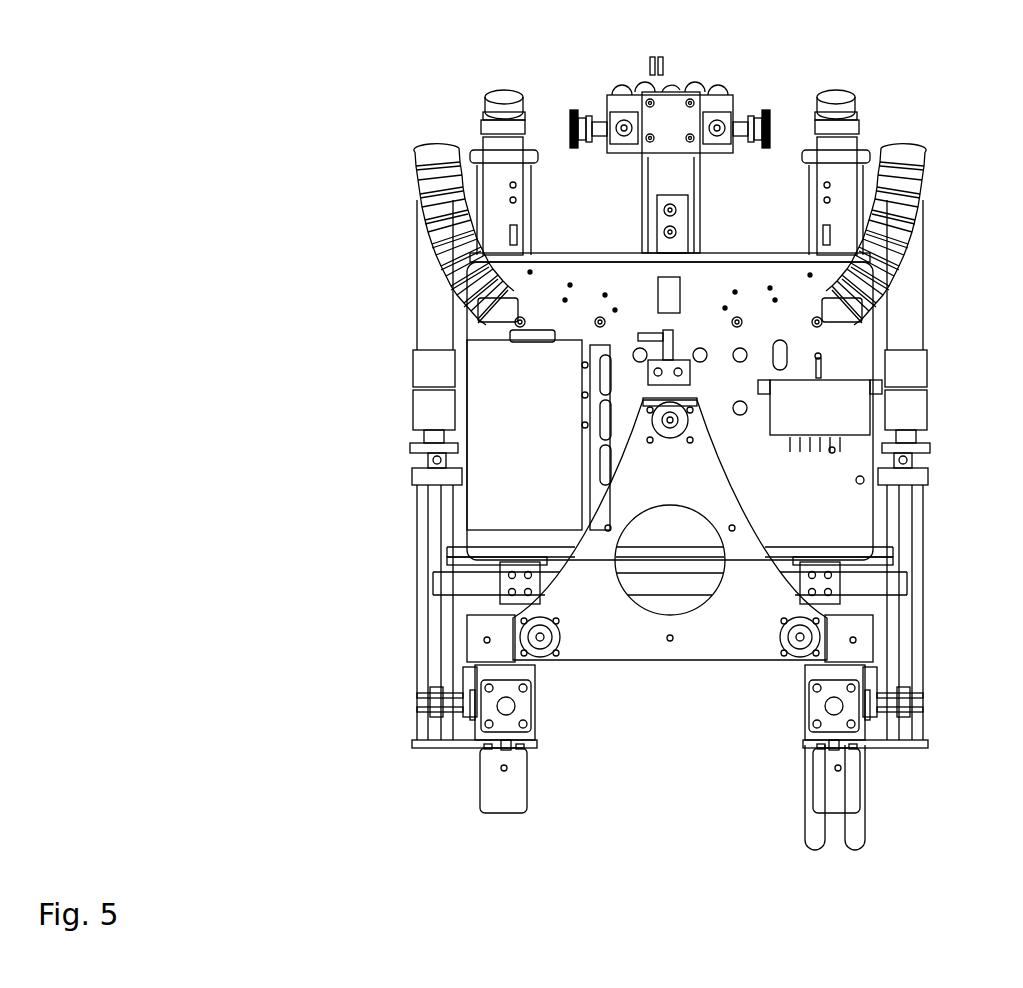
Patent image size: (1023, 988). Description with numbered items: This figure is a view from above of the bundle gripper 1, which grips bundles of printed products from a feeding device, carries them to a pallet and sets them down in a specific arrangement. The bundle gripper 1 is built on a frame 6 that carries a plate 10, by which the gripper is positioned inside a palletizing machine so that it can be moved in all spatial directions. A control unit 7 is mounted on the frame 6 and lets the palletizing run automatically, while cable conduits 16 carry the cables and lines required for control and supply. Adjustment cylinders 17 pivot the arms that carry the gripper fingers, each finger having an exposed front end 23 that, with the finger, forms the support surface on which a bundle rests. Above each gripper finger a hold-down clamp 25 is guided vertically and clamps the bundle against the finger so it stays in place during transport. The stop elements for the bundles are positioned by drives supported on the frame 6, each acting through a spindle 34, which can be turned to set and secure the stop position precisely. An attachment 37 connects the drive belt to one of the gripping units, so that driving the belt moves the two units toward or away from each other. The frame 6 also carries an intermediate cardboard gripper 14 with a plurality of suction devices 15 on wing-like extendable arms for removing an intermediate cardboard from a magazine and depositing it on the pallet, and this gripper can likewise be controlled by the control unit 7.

The bundle gripper 1 is at (290, 246).
The frame 6 is at (697, 655).
The control unit 7 is at (465, 405).
The plate 10 is at (597, 630).
The intermediate cardboard gripper 14 is at (727, 90).
The suction device 15 is at (775, 112).
The cable conduits 16 is at (425, 195).
The adjustment cylinder 17 is at (482, 122).
The exposed front end 23 is at (853, 820).
The hold-down clamp 25 is at (825, 782).
The spindle 34 is at (430, 540).
The attachment 37 is at (505, 582).